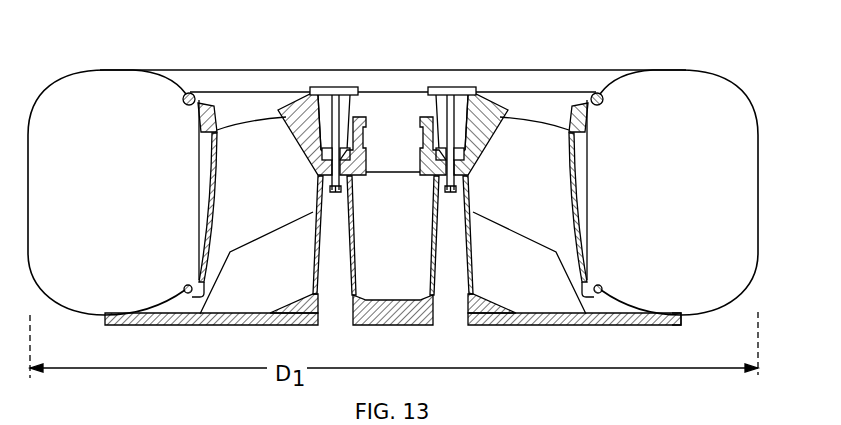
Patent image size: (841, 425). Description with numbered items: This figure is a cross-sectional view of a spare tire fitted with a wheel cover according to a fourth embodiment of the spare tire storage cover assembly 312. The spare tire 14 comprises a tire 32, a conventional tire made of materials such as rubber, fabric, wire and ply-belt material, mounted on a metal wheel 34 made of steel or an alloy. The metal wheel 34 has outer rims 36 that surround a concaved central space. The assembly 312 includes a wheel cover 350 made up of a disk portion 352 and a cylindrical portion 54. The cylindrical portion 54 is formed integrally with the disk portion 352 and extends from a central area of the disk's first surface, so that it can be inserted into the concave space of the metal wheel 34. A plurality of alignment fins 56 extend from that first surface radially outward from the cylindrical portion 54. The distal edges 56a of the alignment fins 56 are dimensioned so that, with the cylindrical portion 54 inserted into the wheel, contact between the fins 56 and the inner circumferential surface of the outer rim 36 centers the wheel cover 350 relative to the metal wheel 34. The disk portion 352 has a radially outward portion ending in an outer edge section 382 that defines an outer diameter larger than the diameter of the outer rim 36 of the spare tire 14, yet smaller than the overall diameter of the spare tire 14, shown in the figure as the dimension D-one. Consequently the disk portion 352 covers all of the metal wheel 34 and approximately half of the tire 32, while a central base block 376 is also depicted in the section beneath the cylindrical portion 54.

The spare tire storage cover assembly 312 is at (114, 40).
The spare tire 14 is at (567, 62).
The tire 32 is at (90, 278).
The metal wheel 34 is at (240, 108).
The outer rim 36 is at (194, 93).
The cylindrical portion 54 is at (474, 242).
The alignment fins 56 is at (277, 250).
The distal edges 56a is at (218, 270).
The wheel cover 350 is at (539, 330).
The disk portion 352 is at (652, 325).
The central base block 376 is at (384, 325).
The outer edge section 382 is at (688, 319).